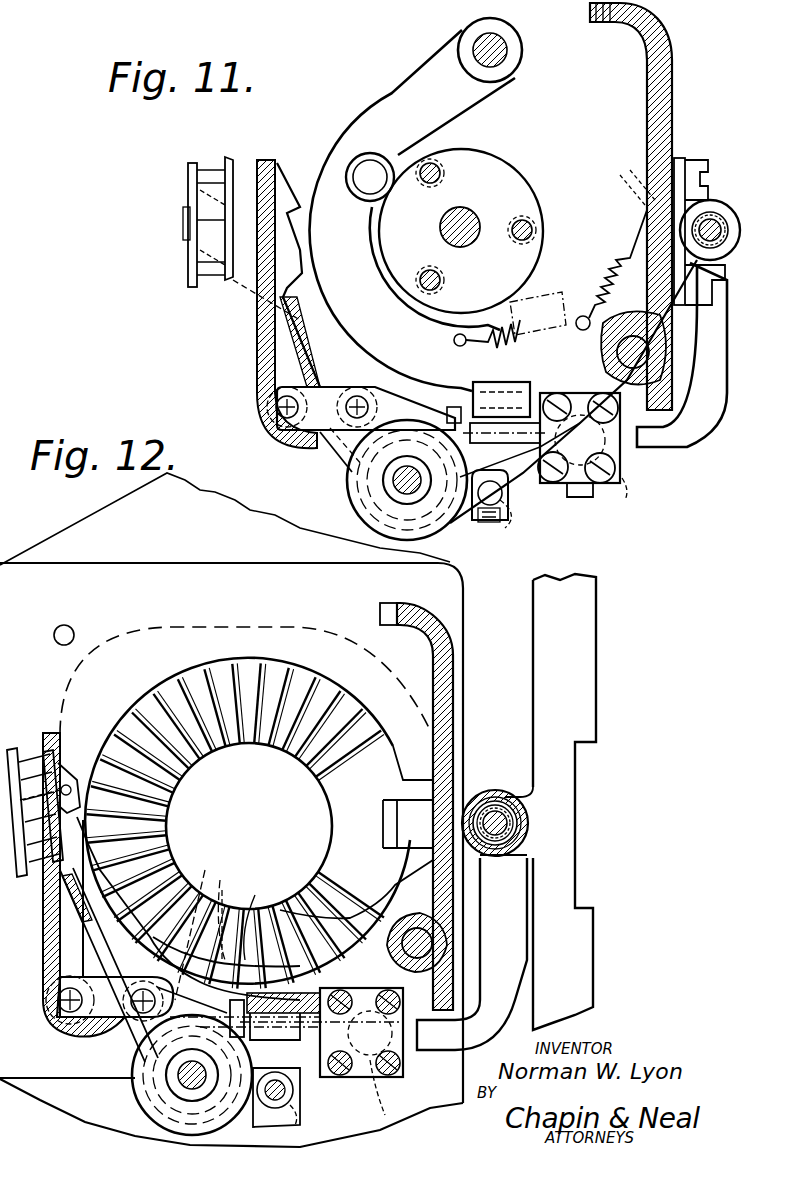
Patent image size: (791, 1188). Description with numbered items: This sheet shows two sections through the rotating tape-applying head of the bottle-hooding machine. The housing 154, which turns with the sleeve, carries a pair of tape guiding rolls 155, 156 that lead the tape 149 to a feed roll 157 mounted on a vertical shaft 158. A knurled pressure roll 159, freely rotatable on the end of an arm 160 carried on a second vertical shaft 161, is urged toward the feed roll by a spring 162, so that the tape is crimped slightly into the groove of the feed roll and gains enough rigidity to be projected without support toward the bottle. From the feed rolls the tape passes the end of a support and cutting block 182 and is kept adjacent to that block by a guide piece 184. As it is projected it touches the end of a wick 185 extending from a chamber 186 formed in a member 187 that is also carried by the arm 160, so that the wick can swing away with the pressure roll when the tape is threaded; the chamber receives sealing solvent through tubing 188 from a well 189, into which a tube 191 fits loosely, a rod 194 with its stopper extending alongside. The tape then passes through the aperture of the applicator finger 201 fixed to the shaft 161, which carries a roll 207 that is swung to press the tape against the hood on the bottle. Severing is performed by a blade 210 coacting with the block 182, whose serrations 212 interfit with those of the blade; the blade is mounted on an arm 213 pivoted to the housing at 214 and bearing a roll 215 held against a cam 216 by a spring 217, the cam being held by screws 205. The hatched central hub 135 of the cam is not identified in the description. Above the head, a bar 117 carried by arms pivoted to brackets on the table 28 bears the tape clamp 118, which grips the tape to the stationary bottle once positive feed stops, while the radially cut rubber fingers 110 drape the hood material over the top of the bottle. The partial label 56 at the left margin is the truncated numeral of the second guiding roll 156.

In FIG. 12, the table 28 is at (463, 612).
In FIG. 12, the cord (156, cut off at edge) 56 is at (40, 865).
In FIG. 12, the fingers 110 is at (290, 755).
In FIG. 12, the bar 117 is at (583, 657).
In FIG. 12, the tape clamp 118 is at (383, 810).
In FIG. 11, the hub shaft 135 is at (445, 220).
In FIG. 11, the tape 149 is at (310, 385).
In FIG. 12, the tape 149 is at (85, 978).
In FIG. 11, the housing 154 is at (660, 78).
In FIG. 12, the housing 154 is at (443, 700).
In FIG. 11, the tape guiding roll 155 is at (210, 193).
In FIG. 12, the tape guiding roll 155 is at (35, 812).
In FIG. 11, the tape guiding roll 156 is at (232, 275).
In FIG. 11, the feed roll 157 is at (350, 482).
In FIG. 12, the feed roll 157 is at (134, 1073).
In FIG. 11, the vertical shaft 158 is at (400, 483).
In FIG. 12, the vertical shaft 158 is at (185, 1082).
In FIG. 11, the knurled pressure roll 159 is at (500, 528).
In FIG. 12, the knurled pressure roll 159 is at (315, 1108).
In FIG. 11, the arm 160 is at (552, 482).
In FIG. 11, the vertical shaft 161 is at (640, 352).
In FIG. 12, the vertical shaft 161 is at (415, 928).
In FIG. 11, the spring 162 is at (610, 275).
In FIG. 11, the support and cutting block 182 is at (455, 407).
In FIG. 12, the support and cutting block 182 is at (237, 1037).
In FIG. 11, the guide piece 184 is at (478, 522).
In FIG. 12, the guide piece 184 is at (258, 1127).
In FIG. 11, the wick 185 is at (495, 415).
In FIG. 12, the wick 185 is at (310, 990).
In FIG. 11, the chamber 186 is at (644, 499).
In FIG. 12, the chamber 186 is at (403, 1098).
In FIG. 11, the member 187 is at (600, 462).
In FIG. 12, the member 187 is at (360, 1070).
In FIG. 11, the tubing 188 is at (690, 440).
In FIG. 12, the tubing 188 is at (500, 978).
In FIG. 12, the well 189 is at (520, 830).
In FIG. 11, the tube 191 is at (700, 222).
In FIG. 12, the tube 191 is at (498, 812).
In FIG. 11, the rod 194 is at (722, 212).
In FIG. 12, the rod 194 is at (518, 805).
In FIG. 12, the applicator finger 201 is at (155, 942).
In FIG. 11, the screws 205 is at (518, 222).
In FIG. 12, the roll 207 is at (268, 888).
In FIG. 11, the blade 210 is at (535, 388).
In FIG. 12, the blade 210 is at (361, 1032).
In FIG. 12, the serrations 212 is at (224, 910).
In FIG. 11, the arm 213 is at (412, 210).
In FIG. 11, the pivot 214 is at (507, 50).
In FIG. 11, the roll 215 is at (380, 165).
In FIG. 11, the cam 216 is at (525, 175).
In FIG. 11, the spring 217 is at (521, 320).